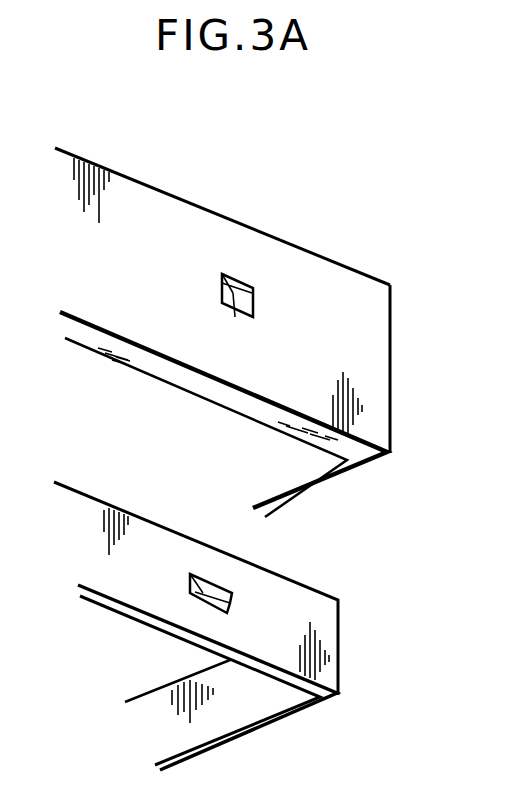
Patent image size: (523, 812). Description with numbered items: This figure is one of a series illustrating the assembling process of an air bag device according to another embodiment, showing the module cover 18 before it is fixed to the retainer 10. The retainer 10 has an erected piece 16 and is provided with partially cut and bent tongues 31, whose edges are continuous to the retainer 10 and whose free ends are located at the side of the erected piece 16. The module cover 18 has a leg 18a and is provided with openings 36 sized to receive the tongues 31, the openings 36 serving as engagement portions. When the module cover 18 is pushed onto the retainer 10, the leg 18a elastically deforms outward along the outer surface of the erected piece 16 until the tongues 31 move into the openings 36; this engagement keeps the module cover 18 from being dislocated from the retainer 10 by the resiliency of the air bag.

The retainer 10 is at (342, 649).
The erected piece 16 is at (150, 603).
The module cover 18 is at (162, 222).
The leg 18a is at (370, 414).
The tongue 31 is at (222, 587).
The opening 36 is at (253, 300).